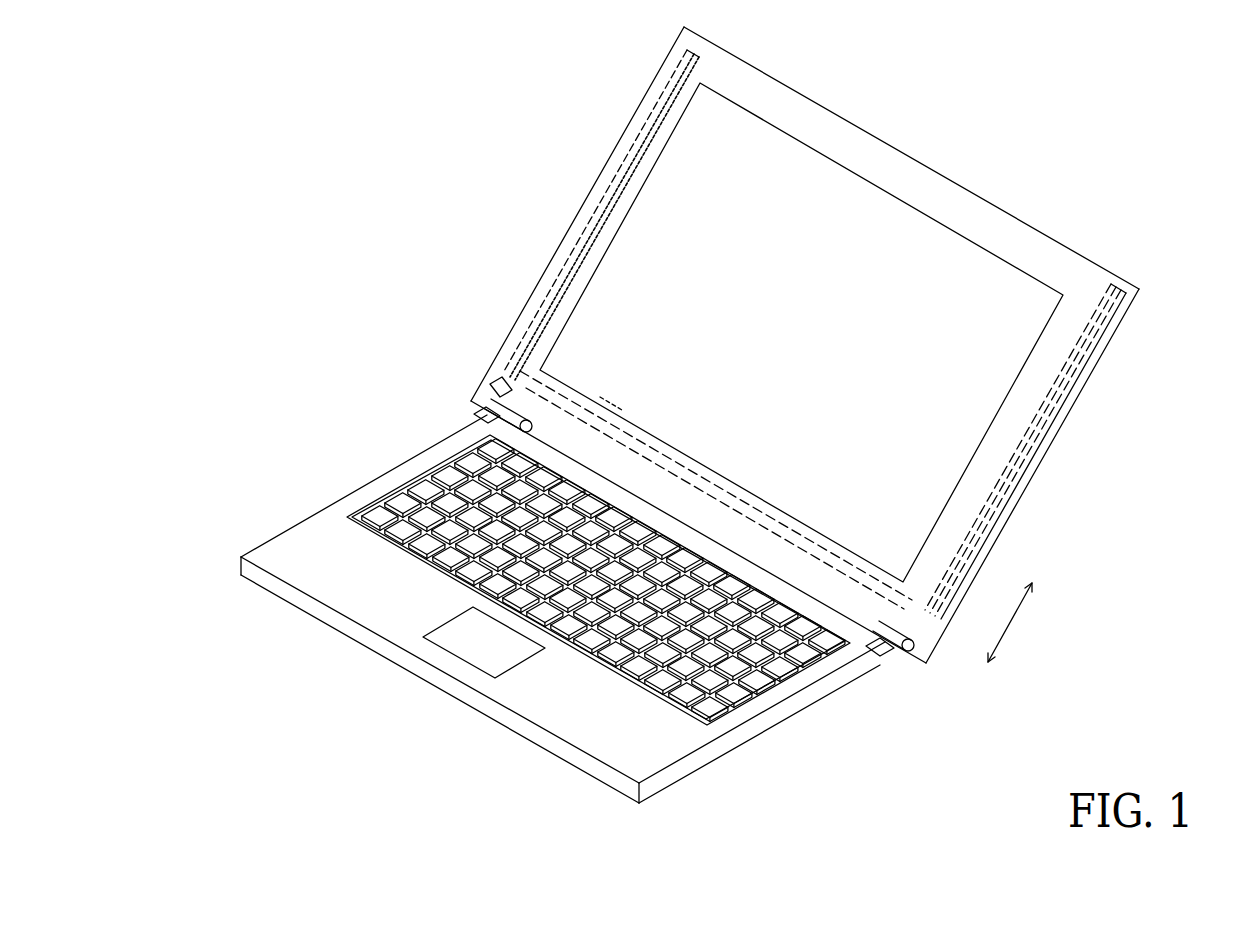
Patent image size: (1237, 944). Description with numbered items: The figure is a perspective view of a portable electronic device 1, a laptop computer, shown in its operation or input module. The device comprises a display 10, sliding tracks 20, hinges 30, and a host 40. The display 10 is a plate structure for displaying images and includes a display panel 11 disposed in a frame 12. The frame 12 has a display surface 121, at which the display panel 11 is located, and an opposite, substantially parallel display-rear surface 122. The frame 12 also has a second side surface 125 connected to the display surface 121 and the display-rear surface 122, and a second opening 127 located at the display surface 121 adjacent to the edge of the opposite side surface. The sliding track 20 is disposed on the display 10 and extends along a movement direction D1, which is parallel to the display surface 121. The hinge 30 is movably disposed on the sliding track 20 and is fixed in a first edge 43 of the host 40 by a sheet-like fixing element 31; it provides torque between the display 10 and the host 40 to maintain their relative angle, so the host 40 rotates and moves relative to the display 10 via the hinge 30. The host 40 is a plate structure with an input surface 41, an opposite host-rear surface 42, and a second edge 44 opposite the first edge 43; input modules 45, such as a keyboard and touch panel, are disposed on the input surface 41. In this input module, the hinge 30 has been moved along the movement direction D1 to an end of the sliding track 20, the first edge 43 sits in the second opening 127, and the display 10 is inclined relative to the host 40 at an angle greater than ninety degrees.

The portable electronic device 1 is at (275, 112).
The display 10 is at (1151, 218).
The display panel 11 is at (982, 285).
The frame 12 is at (1074, 318).
The second side surface 125 is at (901, 152).
The second opening 127 is at (503, 385).
The display surface 121 is at (1032, 386).
The display-rear surface 122 is at (1173, 397).
The sliding track 20 is at (630, 175).
The hinge 30 is at (478, 416).
The fixing element 31 is at (487, 405).
The host 40 is at (330, 468).
The input surface 41 is at (305, 552).
The host-rear surface 42 is at (560, 690).
The first edge 43 is at (612, 392).
The second edge 44 is at (485, 703).
The input module 45 is at (440, 548).
The movement direction D1 is at (1019, 622).